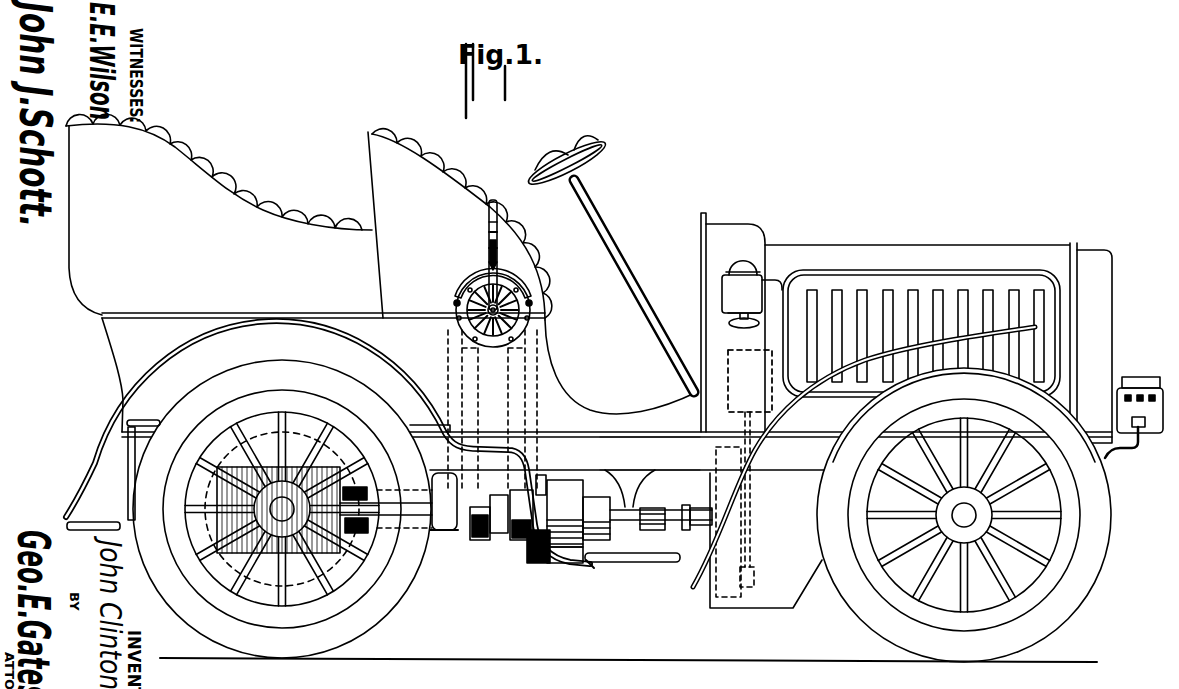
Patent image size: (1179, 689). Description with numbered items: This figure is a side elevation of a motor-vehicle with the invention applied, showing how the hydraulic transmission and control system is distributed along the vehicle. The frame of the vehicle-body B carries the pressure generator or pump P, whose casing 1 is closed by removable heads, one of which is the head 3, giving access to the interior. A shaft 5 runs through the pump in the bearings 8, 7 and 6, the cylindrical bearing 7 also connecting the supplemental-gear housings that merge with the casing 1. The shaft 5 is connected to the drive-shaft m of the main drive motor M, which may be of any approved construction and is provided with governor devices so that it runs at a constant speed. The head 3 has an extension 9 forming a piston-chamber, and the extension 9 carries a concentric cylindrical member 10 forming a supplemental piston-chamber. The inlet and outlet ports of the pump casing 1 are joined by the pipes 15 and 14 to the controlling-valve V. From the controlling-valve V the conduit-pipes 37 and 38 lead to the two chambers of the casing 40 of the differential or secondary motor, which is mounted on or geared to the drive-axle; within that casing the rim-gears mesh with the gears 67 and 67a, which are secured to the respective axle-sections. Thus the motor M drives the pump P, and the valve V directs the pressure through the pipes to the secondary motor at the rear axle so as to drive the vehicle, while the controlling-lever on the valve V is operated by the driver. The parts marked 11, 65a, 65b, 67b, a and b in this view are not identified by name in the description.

The casing 1 is at (565, 513).
The removable head 3 is at (282, 509).
The shaft 5 is at (686, 532).
The bearing 6 is at (668, 531).
The cylindrical bearing 7 is at (597, 512).
The bearing 8 is at (528, 548).
The extension 9 is at (498, 502).
The cylindrical member 10 is at (474, 533).
The shaft 11 is at (663, 511).
The pipe 14 is at (541, 477).
The pipe 15 is at (518, 543).
The conduit-pipe 37 is at (438, 492).
The conduit-pipe 38 is at (456, 532).
The casing 40 is at (222, 530).
The controller lever 65a is at (489, 212).
The lever segment 65b is at (489, 262).
The gear 67 is at (497, 260).
The gear 67a is at (531, 286).
The lever sleeve 67b is at (499, 270).
The controlling-valve V is at (493, 319).
The main drive motor M is at (740, 393).
The vehicle-body B is at (650, 453).
The pressure generator or pump P is at (564, 567).
The conduit end a is at (578, 564).
The bar b is at (620, 557).
The drive-shaft m is at (702, 509).